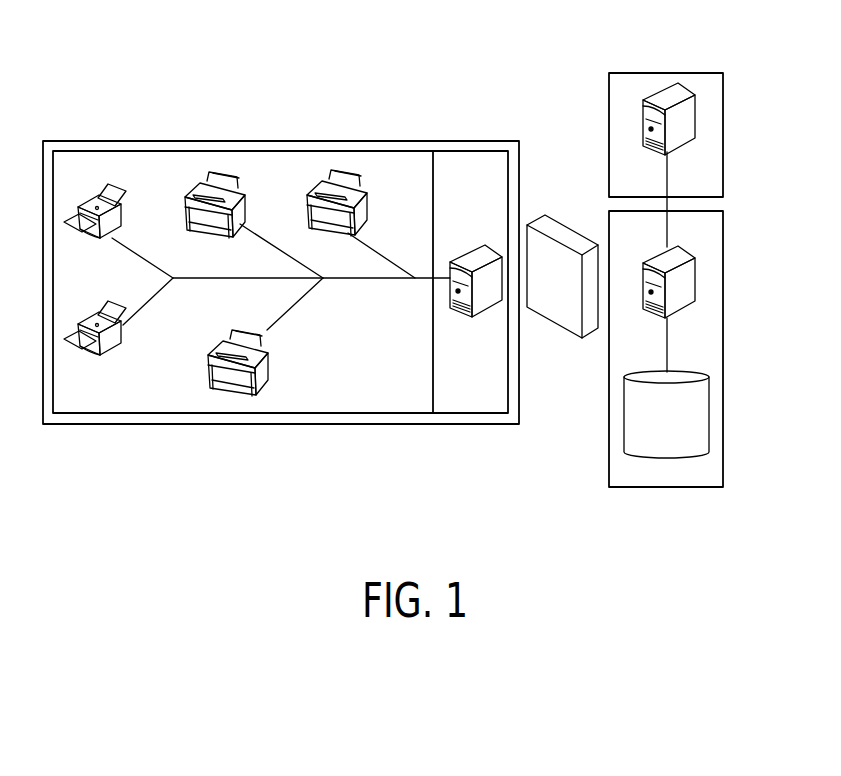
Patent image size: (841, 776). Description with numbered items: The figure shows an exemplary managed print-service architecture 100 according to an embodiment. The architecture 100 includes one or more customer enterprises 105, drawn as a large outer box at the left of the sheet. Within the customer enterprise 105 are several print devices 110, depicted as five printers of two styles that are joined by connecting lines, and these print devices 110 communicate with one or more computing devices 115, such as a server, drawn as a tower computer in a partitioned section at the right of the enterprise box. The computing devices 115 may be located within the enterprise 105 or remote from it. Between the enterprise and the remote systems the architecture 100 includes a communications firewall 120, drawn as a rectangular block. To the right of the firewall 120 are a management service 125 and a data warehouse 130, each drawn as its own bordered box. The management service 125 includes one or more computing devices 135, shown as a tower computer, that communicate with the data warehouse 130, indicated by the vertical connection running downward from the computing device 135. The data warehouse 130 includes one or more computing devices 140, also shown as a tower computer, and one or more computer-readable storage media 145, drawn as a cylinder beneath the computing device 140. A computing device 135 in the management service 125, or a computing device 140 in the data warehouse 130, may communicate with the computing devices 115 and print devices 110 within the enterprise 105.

The architecture 100 is at (277, 74).
The customer enterprise 105 is at (100, 141).
The print devices 110 is at (189, 151).
The computing devices 115 is at (471, 151).
The communications firewall 120 is at (563, 325).
The management service 125 is at (723, 131).
The data warehouse 130 is at (723, 325).
The computing devices 135 is at (683, 141).
The computing devices 140 is at (684, 306).
The computer-readable storage media 145 is at (709, 420).